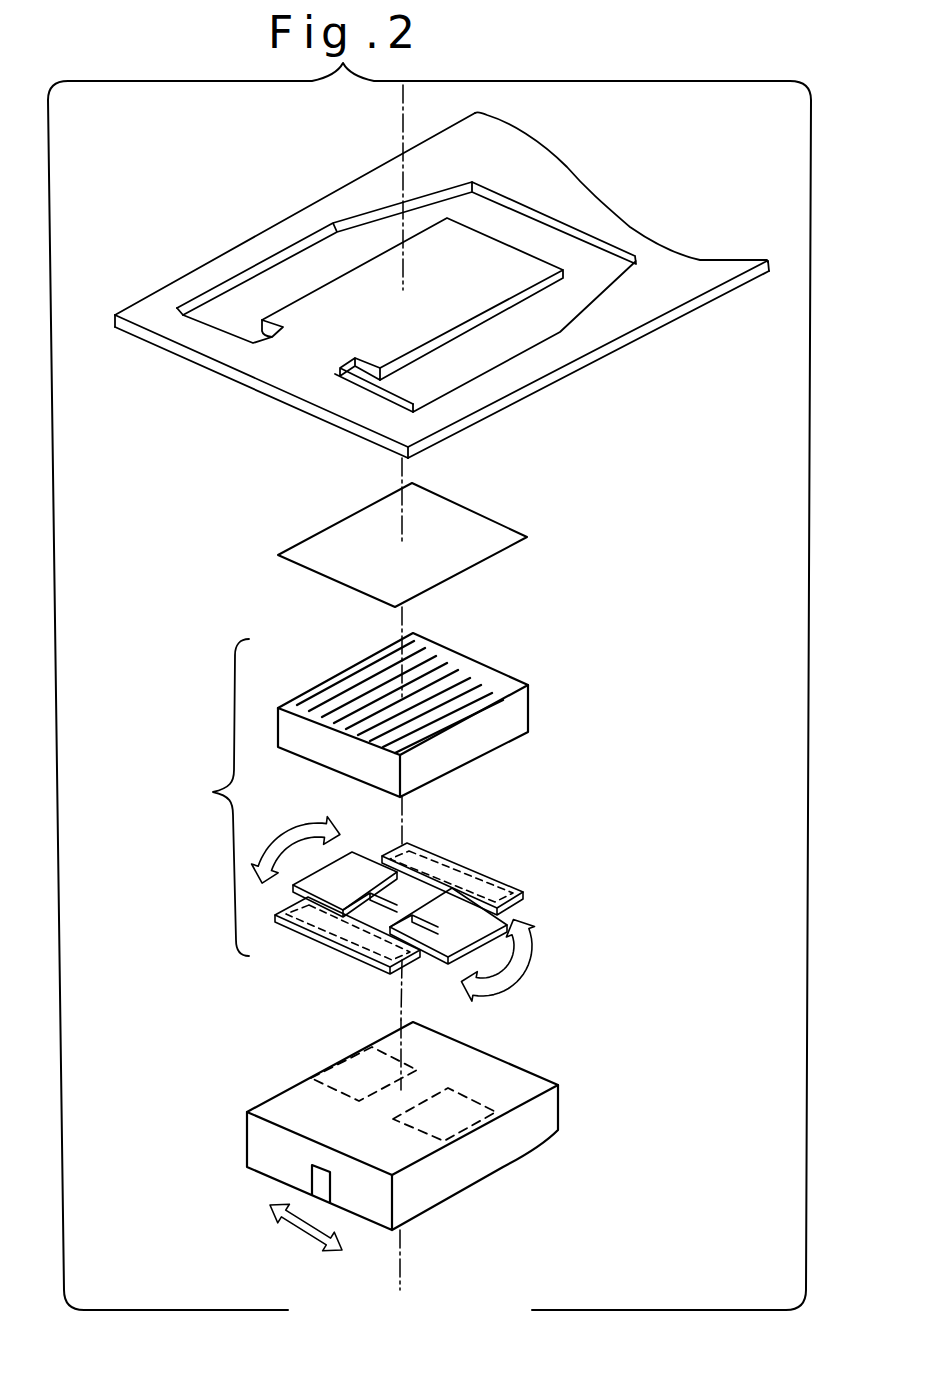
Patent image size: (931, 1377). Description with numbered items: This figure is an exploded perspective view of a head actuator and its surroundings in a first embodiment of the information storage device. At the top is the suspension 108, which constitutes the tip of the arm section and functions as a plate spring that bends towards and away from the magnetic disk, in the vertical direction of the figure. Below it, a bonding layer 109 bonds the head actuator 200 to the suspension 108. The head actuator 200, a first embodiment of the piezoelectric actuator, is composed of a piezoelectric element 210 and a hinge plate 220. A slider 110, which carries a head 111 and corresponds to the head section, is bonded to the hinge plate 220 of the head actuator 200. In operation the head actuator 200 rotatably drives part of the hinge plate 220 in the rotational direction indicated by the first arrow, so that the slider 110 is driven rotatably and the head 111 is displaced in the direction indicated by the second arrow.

The suspension 108 is at (605, 350).
The bonding layer 109 is at (488, 545).
The head actuator 200 is at (200, 797).
The piezoelectric element 210 is at (517, 716).
The hinge plate 220 is at (520, 884).
The slider 110 is at (421, 1143).
The head 111 is at (318, 1182).